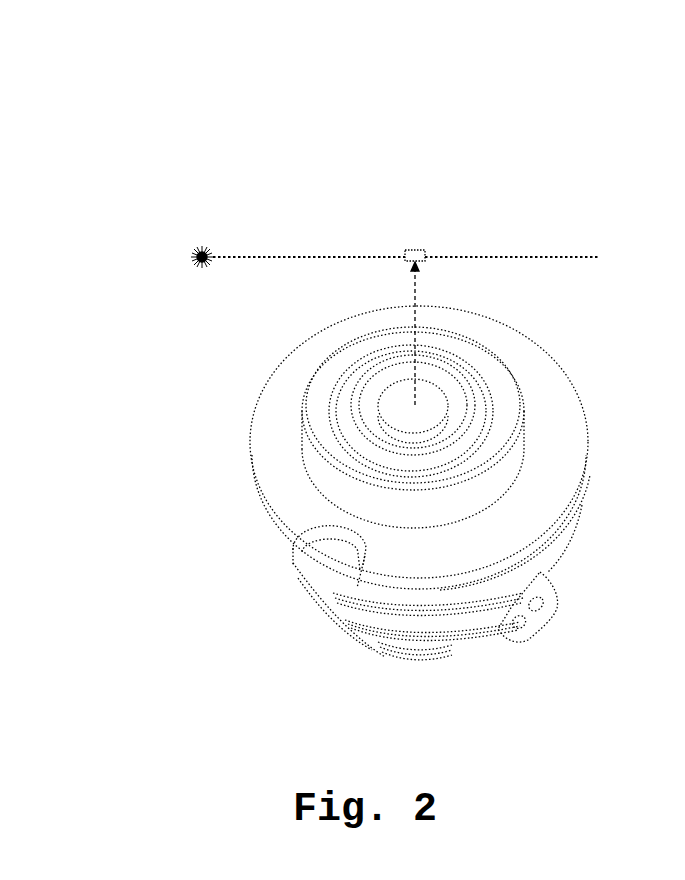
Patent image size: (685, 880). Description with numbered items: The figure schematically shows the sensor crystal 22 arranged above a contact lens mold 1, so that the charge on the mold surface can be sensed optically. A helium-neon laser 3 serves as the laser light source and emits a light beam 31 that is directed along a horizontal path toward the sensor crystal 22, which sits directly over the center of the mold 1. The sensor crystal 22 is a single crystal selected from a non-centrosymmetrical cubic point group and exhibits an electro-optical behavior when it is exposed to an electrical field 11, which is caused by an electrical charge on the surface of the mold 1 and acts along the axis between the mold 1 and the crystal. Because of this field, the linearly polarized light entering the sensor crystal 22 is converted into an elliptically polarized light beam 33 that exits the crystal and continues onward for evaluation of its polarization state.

The male contact lens mold 1 is at (476, 573).
The helium-neon laser 3 is at (202, 250).
The electrical field 11 is at (415, 296).
The sensor crystal 22 is at (416, 248).
The light beam 31 is at (260, 260).
The elliptically polarized light beam 33 is at (573, 257).